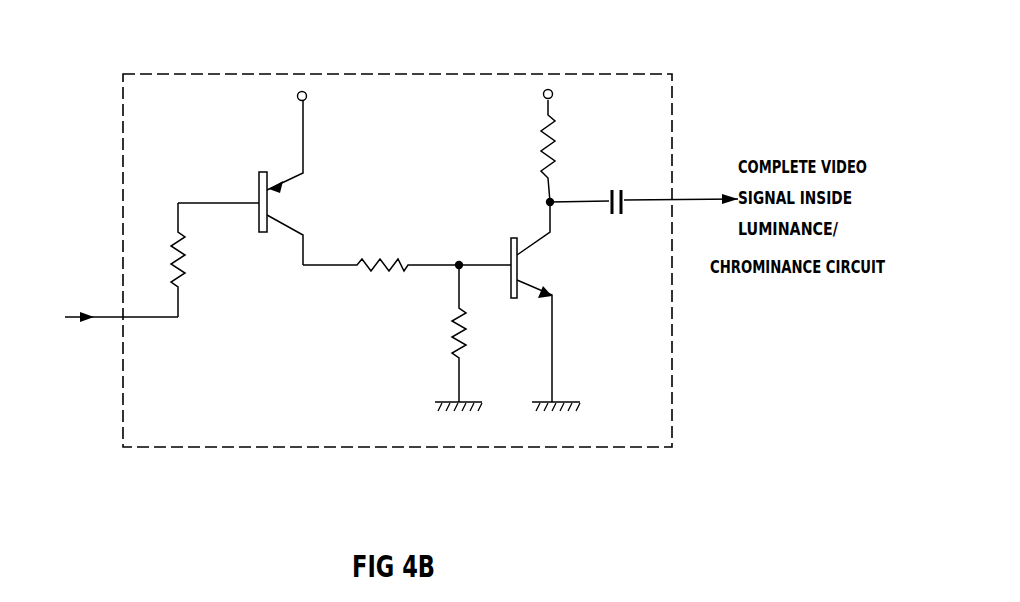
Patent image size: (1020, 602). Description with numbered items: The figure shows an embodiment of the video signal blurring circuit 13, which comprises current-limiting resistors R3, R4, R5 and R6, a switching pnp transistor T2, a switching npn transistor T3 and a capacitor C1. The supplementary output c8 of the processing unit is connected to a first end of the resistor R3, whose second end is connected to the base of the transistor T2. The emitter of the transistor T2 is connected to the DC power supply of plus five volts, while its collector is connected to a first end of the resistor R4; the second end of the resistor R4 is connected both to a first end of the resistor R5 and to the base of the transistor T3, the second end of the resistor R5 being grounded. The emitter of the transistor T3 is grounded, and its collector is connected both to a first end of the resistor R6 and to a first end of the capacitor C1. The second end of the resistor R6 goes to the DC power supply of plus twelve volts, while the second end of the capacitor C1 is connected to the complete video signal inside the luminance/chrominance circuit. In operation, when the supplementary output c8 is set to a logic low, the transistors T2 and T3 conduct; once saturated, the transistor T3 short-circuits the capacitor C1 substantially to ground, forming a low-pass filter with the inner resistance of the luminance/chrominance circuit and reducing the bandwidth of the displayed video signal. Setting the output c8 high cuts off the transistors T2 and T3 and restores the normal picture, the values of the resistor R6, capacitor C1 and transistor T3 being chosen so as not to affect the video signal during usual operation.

The video signal blurring circuit 13 is at (671, 91).
The supplementary output c8 is at (106, 318).
The current-limiting resistor R3 is at (192, 260).
The current-limiting resistor R4 is at (407, 252).
The current-limiting resistor R5 is at (464, 338).
The current-limiting resistor R6 is at (571, 145).
The switching pnp transistor T2 is at (261, 175).
The switching npn transistor T3 is at (545, 306).
The capacitor C1 is at (644, 216).